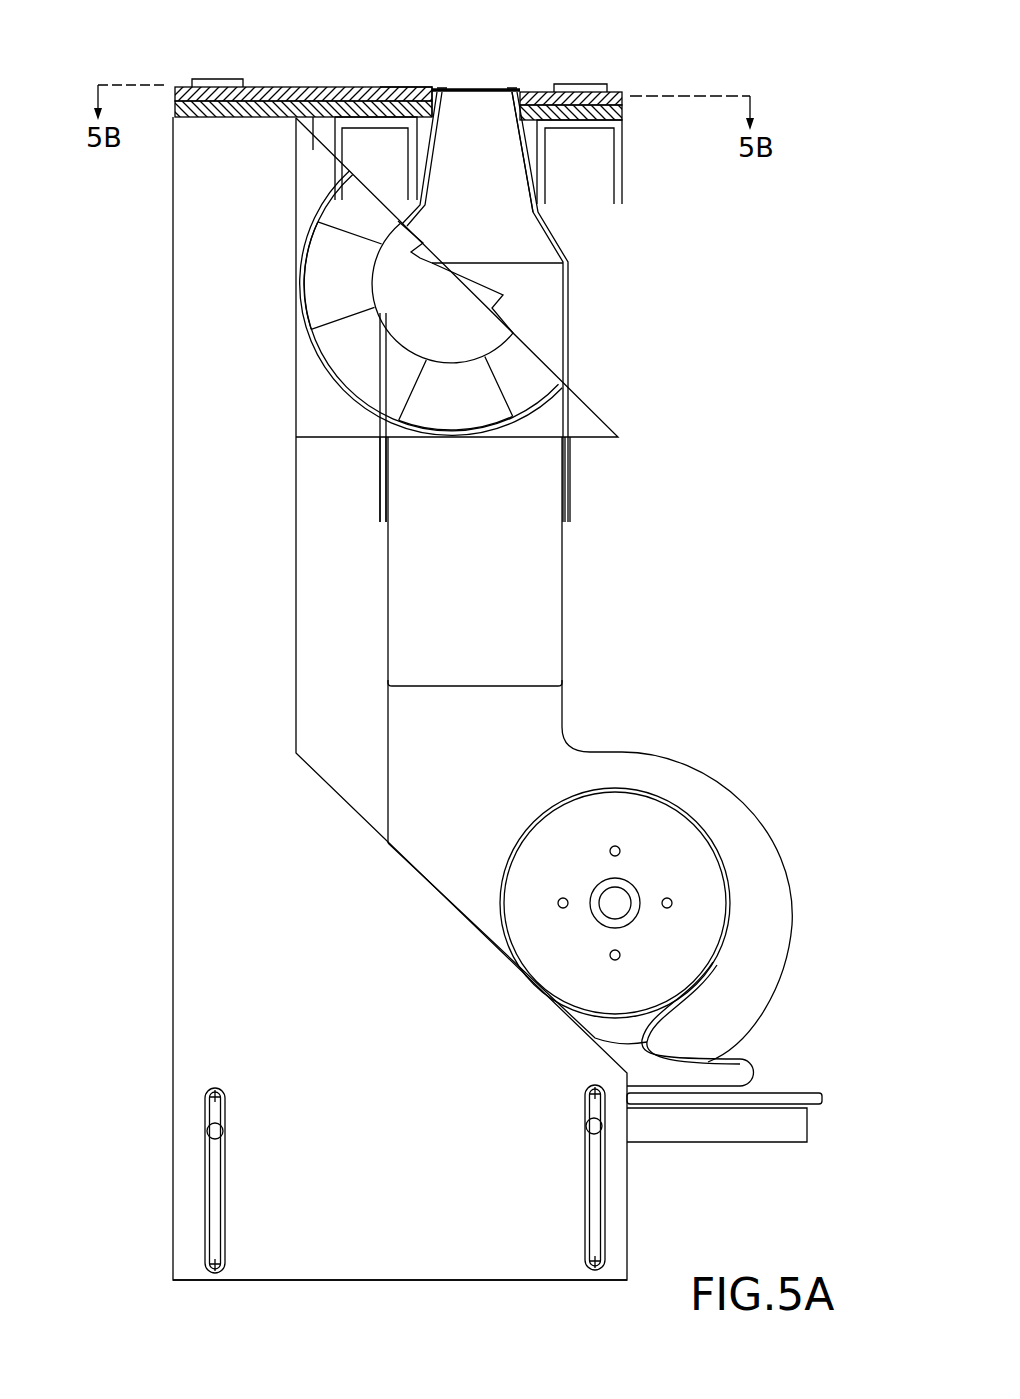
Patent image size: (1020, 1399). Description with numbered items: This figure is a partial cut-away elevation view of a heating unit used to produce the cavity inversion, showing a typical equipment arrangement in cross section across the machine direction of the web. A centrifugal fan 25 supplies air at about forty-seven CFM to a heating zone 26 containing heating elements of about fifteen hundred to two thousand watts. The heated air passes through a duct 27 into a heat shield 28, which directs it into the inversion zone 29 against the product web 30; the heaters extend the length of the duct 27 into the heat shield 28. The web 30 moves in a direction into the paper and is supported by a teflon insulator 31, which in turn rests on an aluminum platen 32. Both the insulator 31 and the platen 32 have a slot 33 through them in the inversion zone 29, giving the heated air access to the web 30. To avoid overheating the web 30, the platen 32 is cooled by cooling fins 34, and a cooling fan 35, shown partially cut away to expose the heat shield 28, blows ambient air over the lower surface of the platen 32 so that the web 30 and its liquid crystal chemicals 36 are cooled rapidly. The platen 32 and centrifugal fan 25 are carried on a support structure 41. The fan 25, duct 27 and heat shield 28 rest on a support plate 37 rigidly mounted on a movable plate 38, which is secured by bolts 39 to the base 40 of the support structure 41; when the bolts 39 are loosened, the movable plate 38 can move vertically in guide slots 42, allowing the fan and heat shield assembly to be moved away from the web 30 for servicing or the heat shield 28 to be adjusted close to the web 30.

The centrifugal fan 25 is at (768, 958).
The heating zone 26 is at (527, 617).
The duct 27 is at (533, 490).
The heat shield 28 is at (555, 232).
The inversion zone 29 is at (478, 88).
The product web 30 is at (403, 88).
The teflon insulator 31 is at (320, 87).
The aluminum platen 32 is at (278, 87).
The slot 33 is at (493, 105).
The cooling fins 34 is at (625, 149).
The cooling fan 35 is at (463, 331).
The liquid crystal chemicals 36 is at (461, 88).
The support plate 37 is at (823, 1098).
The movable plate 38 is at (772, 1122).
The bolts 39 is at (205, 1137).
The base 40 is at (247, 1282).
The support structure 41 is at (208, 930).
The guide slots 42 is at (205, 1215).